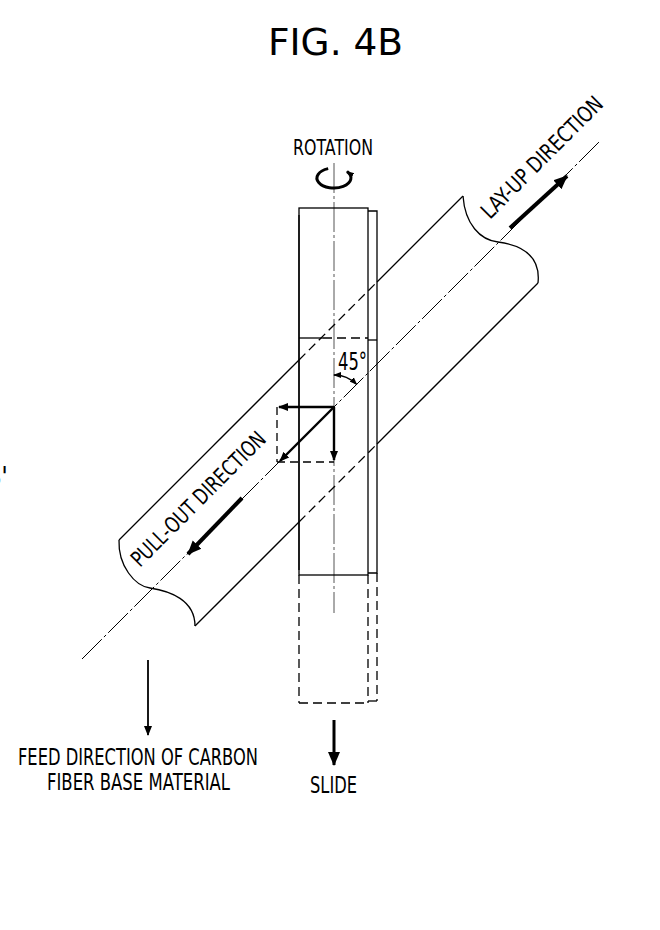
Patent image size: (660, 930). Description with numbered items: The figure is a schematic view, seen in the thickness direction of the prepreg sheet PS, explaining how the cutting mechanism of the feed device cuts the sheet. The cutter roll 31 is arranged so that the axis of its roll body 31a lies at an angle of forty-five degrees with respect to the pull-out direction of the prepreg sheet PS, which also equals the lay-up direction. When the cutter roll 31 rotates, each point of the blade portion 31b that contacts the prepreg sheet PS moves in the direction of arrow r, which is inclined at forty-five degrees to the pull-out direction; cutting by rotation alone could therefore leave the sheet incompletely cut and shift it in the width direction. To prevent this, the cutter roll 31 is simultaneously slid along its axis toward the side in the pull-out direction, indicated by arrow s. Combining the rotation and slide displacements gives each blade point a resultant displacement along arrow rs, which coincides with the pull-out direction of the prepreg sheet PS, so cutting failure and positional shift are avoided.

The cutter roll 31 is at (297, 227).
The roll body 31a is at (313, 292).
The blade portion 31b is at (372, 530).
The prepreg sheet PS is at (237, 452).
The arrow r (rotation displacement direction) r is at (312, 404).
The arrow s (slide displacement direction) s is at (336, 437).
The arrow rs (combined displacement direction) rs is at (304, 438).